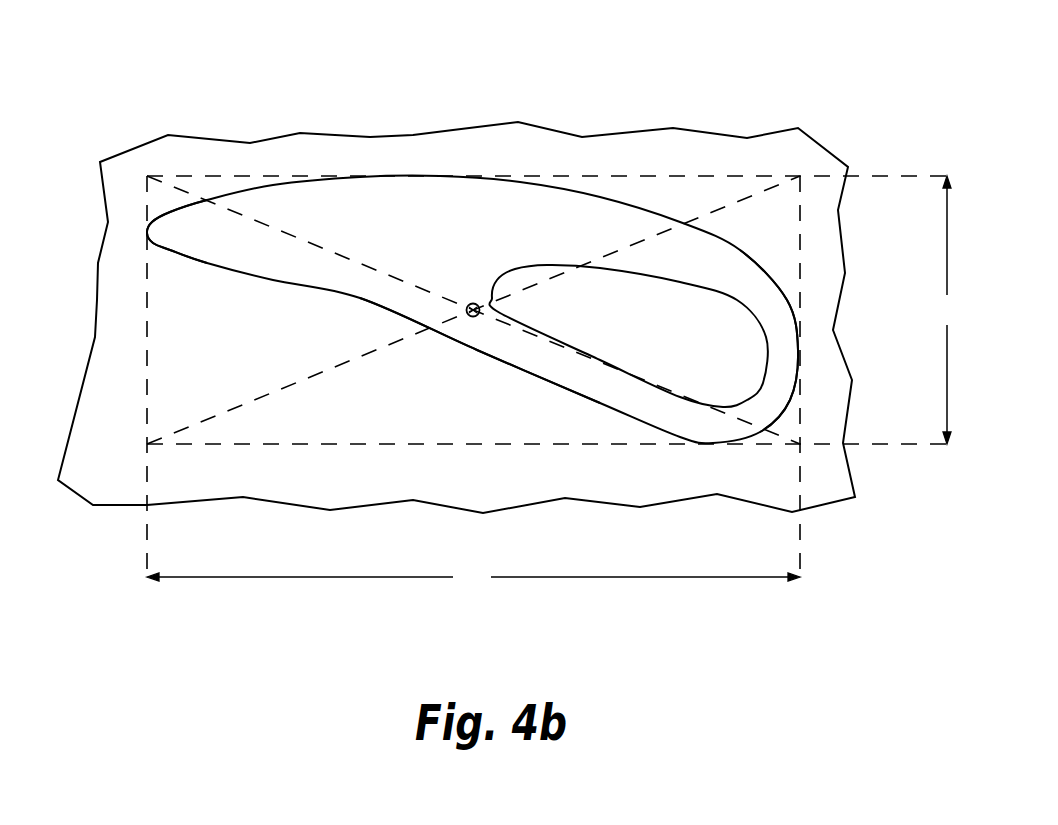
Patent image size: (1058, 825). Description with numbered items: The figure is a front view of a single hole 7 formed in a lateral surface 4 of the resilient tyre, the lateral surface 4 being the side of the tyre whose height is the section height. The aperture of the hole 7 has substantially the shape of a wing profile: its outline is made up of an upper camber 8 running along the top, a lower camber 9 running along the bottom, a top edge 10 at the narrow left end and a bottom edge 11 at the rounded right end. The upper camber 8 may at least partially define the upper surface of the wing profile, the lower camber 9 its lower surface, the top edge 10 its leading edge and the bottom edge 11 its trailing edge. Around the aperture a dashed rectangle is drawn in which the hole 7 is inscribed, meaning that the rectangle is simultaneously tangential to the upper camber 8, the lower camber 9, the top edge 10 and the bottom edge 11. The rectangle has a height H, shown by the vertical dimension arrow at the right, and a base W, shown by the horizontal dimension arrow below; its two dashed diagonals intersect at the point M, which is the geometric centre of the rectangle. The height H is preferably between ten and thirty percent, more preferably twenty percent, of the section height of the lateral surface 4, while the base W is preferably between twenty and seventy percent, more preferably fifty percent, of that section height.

The lateral surface 4 is at (82, 462).
The hole 7 is at (293, 162).
The upper camber 8 is at (443, 177).
The lower camber 9 is at (477, 350).
The top edge 10 is at (145, 234).
The bottom edge 11 is at (798, 352).
The centre of the rectangle M is at (472, 303).
The height of the rectangle H is at (947, 310).
The base of the rectangle W is at (473, 577).